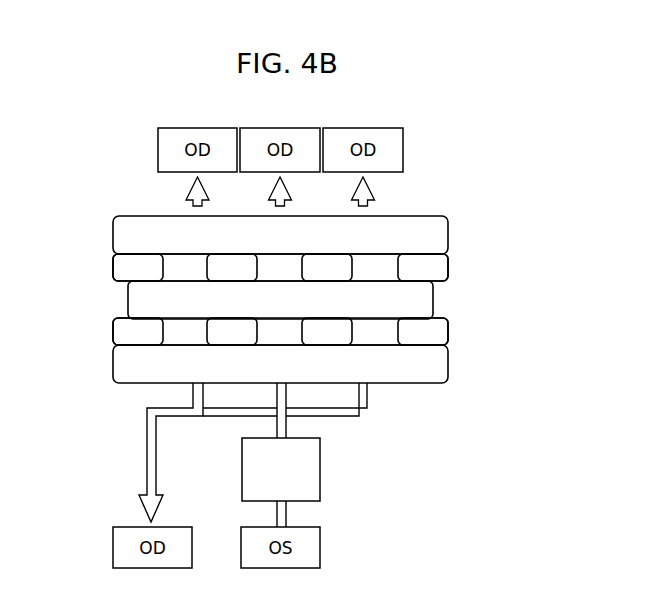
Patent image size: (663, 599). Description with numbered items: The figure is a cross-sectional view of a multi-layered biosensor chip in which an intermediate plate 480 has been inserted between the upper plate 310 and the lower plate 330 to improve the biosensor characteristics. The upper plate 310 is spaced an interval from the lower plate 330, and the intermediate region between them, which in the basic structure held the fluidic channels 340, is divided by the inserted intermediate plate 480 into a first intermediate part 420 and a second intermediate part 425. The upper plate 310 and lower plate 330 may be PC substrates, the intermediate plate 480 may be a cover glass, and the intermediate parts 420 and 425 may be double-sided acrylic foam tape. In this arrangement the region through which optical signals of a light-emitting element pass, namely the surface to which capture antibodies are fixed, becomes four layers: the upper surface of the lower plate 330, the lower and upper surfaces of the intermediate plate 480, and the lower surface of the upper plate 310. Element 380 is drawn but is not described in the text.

The upper plate 310 is at (448, 235).
The second intermediate part 425 is at (448, 268).
The intermediate plate 480 is at (170, 297).
The fluidic channels 340 is at (180, 267).
The first intermediate part 420 is at (448, 333).
The lower plate 330 is at (448, 371).
The optical sensor 380 is at (320, 478).